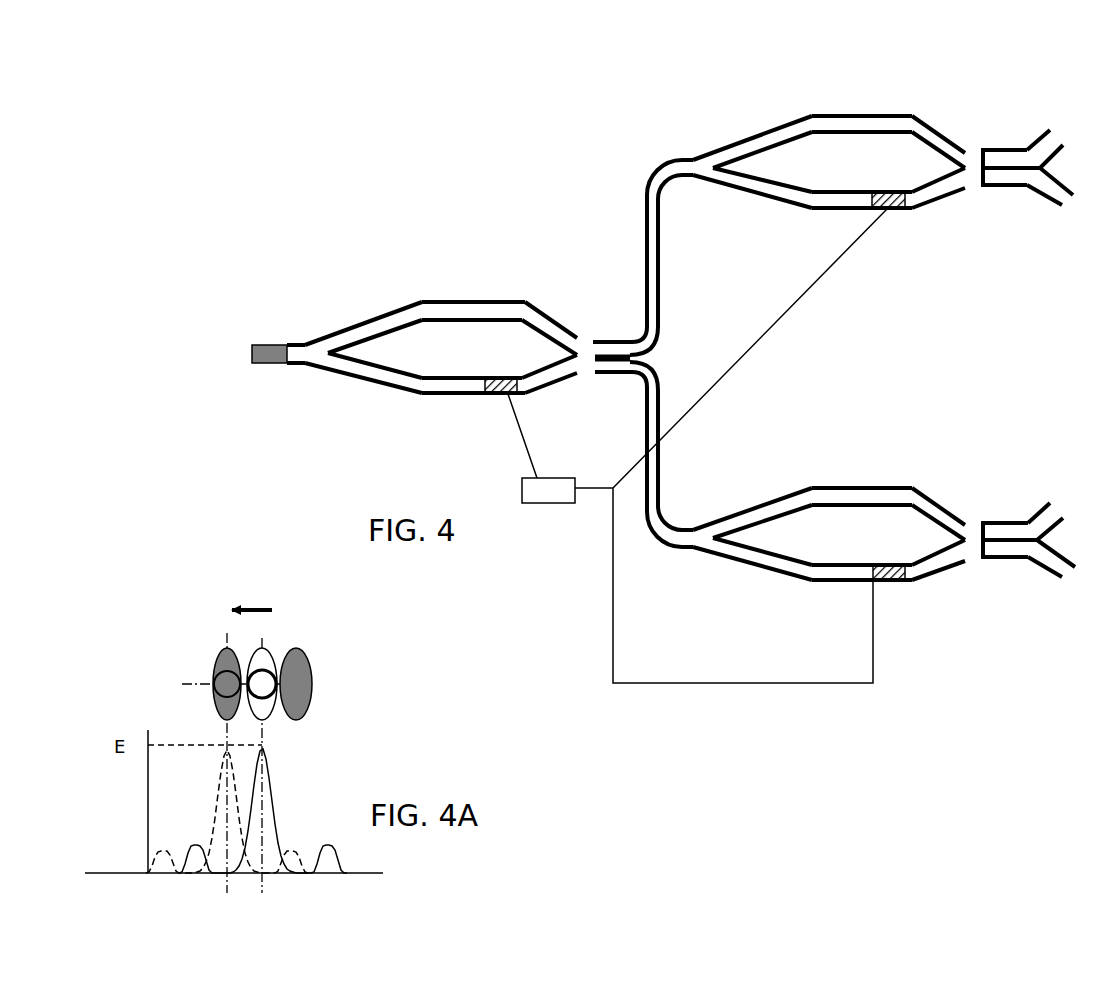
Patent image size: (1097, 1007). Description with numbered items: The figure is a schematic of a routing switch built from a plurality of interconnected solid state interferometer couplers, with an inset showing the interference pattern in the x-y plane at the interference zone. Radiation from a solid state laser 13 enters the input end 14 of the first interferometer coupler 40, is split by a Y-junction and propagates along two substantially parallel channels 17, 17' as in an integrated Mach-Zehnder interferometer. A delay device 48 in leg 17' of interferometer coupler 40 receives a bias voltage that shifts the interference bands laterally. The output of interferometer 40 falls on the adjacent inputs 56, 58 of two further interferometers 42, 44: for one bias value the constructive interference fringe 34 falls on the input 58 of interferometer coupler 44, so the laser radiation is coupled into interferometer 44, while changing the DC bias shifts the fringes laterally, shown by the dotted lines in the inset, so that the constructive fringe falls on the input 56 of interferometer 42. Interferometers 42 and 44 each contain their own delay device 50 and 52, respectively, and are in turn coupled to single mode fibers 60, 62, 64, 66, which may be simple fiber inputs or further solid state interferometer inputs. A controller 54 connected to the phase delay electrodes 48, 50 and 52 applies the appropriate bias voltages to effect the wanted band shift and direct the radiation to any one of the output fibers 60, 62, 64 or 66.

In FIG. 4, the solid state laser 13 is at (260, 362).
In FIG. 4, the input end 14 is at (287, 363).
In FIG. 4, the parallel channel 17 is at (667, 284).
In FIG. 4, the parallel channel 17' is at (667, 386).
In FIG. 4A, the constructive interference fringe 34 is at (273, 767).
In FIG. 4, the interferometer coupler 40 is at (411, 276).
In FIG. 4, the interferometer 42 is at (695, 73).
In FIG. 4, the interferometer coupler 44 is at (882, 446).
In FIG. 4, the delay device 48 is at (503, 377).
In FIG. 4, the delay device 50 is at (887, 190).
In FIG. 4, the delay device 52 is at (892, 582).
In FIG. 4, the controller 54 is at (548, 493).
In FIG. 4, the input 56 is at (594, 345).
In FIG. 4A, the input 56 is at (209, 675).
In FIG. 4, the input 58 is at (592, 360).
In FIG. 4A, the input 58 is at (273, 666).
In FIG. 4, the single mode fiber 60 is at (1002, 527).
In FIG. 4, the single mode fiber 62 is at (1010, 547).
In FIG. 4, the single mode fiber 64 is at (1003, 155).
In FIG. 4, the single mode fiber 66 is at (1008, 177).